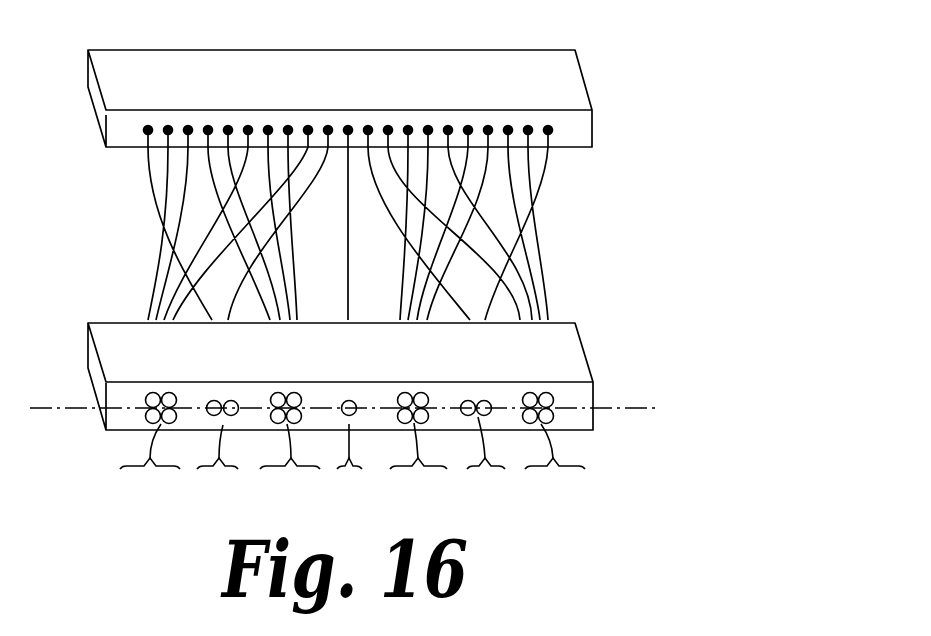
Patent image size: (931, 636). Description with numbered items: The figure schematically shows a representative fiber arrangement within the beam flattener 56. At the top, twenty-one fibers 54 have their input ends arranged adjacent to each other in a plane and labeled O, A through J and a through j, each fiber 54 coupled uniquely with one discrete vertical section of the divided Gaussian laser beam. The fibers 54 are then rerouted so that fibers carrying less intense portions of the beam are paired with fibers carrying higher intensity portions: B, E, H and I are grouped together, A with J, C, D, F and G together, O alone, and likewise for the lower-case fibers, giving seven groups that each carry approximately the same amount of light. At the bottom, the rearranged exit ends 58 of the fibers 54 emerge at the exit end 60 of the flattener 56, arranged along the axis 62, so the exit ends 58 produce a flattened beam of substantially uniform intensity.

The fibers 54 is at (541, 201).
The beam flattener 56 is at (118, 67).
The exit ends 58 is at (553, 417).
The exit end 60 is at (557, 354).
The axis 62 is at (55, 409).